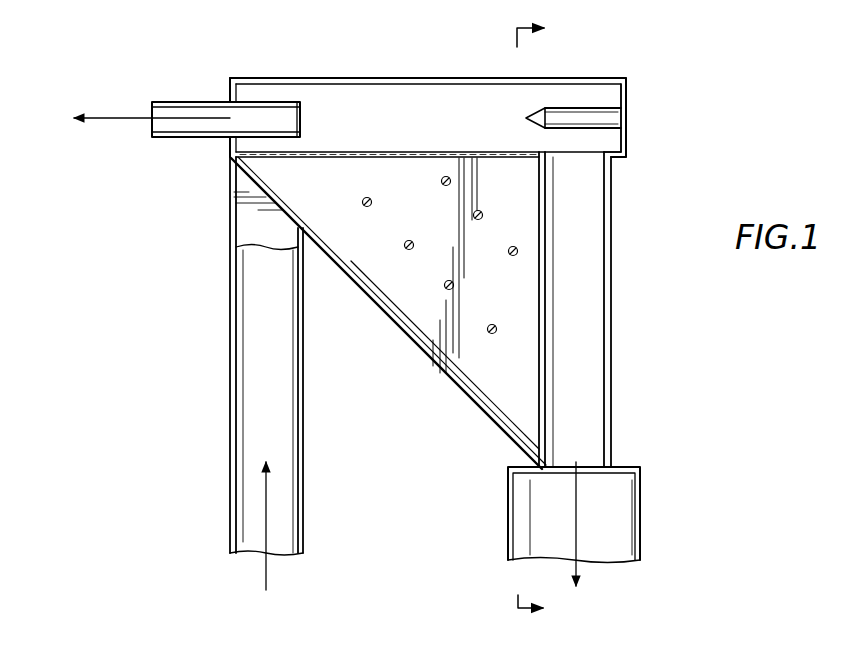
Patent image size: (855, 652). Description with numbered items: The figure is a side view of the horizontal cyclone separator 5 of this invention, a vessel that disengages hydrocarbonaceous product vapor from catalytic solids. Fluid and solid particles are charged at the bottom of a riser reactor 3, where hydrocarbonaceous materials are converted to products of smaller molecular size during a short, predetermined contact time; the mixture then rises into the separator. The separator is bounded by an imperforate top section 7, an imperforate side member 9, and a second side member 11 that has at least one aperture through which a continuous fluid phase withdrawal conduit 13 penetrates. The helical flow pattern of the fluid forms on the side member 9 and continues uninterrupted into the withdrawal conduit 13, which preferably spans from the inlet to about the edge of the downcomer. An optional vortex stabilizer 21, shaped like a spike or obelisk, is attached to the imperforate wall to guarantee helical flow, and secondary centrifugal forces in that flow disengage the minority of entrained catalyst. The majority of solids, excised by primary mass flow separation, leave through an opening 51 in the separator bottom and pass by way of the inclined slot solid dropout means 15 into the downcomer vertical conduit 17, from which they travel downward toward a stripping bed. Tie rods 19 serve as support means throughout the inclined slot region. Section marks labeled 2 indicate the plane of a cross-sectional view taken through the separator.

The section line 2- 2 is at (540, 316).
The riser reactor 3 is at (230, 421).
The horizontal cyclone separator 5 is at (387, 56).
The imperforate top section 7 is at (302, 78).
The imperforate side member 9 is at (627, 90).
The second side member 11 is at (228, 98).
The fluid phase withdrawal conduit 13 is at (167, 99).
The inclined slot solid dropout means 15 is at (437, 371).
The downcomer vertical conduit 17 is at (611, 410).
The tie rods 19 is at (372, 203).
The vortex stabilizer 21 is at (594, 122).
The opening 51 is at (385, 150).